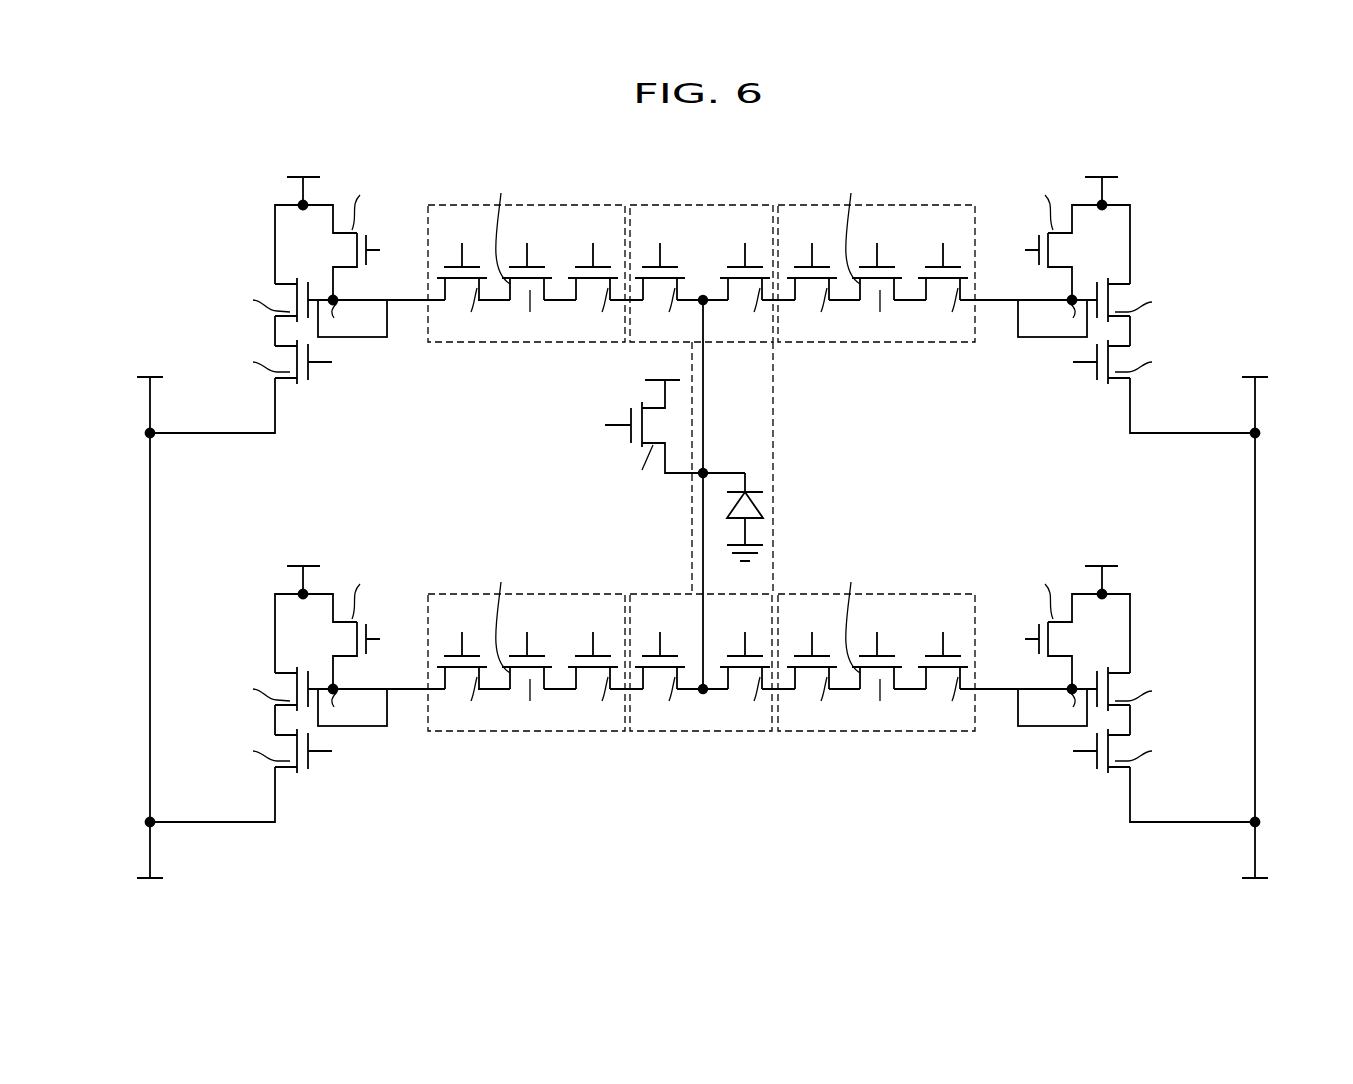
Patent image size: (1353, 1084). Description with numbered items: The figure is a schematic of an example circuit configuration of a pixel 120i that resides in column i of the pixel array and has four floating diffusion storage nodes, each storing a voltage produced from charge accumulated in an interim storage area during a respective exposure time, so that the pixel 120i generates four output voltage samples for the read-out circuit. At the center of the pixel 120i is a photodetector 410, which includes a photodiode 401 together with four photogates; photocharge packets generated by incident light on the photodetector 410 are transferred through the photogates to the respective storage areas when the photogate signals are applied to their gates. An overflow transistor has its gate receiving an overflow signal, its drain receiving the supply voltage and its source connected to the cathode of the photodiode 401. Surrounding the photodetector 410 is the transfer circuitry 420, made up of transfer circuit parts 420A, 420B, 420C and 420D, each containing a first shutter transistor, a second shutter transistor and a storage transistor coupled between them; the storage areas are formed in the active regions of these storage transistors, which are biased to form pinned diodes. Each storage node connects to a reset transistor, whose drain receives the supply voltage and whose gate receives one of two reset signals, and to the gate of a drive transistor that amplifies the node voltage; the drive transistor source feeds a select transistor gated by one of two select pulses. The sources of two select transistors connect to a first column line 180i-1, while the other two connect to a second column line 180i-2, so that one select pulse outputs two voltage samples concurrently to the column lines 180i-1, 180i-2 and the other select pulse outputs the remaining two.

The pixel 120i is at (1212, 156).
The first column line 180i-1 is at (148, 617).
The second column line 180i-2 is at (1257, 597).
The photodetector 410 is at (776, 430).
The photodiode 401 is at (757, 505).
The transfer circuitry 420 is at (884, 923).
The first transfer circuit part 420A is at (577, 594).
The second transfer circuit part 420B is at (577, 205).
The third transfer circuit part 420C is at (928, 205).
The fourth transfer circuit part 420D is at (928, 594).